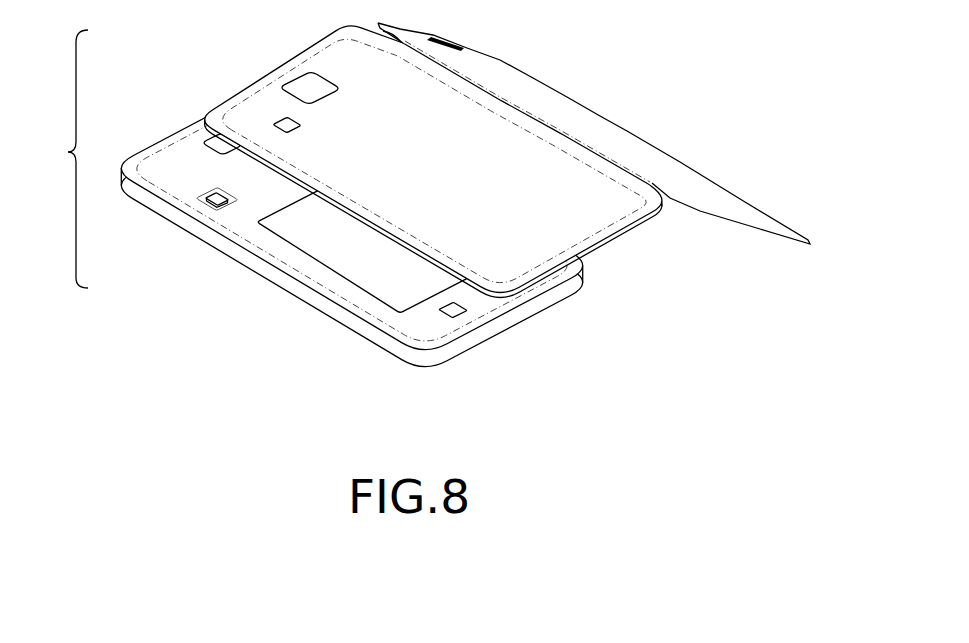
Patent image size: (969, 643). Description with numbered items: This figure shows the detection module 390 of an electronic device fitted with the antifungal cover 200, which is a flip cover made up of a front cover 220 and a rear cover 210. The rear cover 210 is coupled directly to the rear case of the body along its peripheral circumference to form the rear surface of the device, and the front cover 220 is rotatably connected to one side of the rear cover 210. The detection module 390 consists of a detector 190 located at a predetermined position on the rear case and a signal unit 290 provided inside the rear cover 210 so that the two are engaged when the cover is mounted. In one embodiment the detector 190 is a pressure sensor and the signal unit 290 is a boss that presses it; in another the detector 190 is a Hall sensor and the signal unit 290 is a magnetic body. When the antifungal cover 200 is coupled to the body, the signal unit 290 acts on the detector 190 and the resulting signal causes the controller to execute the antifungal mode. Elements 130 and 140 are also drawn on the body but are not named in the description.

The main body / tray 130 is at (298, 268).
The accommodating recess 140 is at (377, 278).
The detector 190 is at (207, 205).
The antifungal cover 200 is at (569, 81).
The rear cover 210 is at (607, 233).
The front cover 220 is at (677, 170).
The signal unit 290 is at (273, 120).
The detection module 390 is at (59, 159).